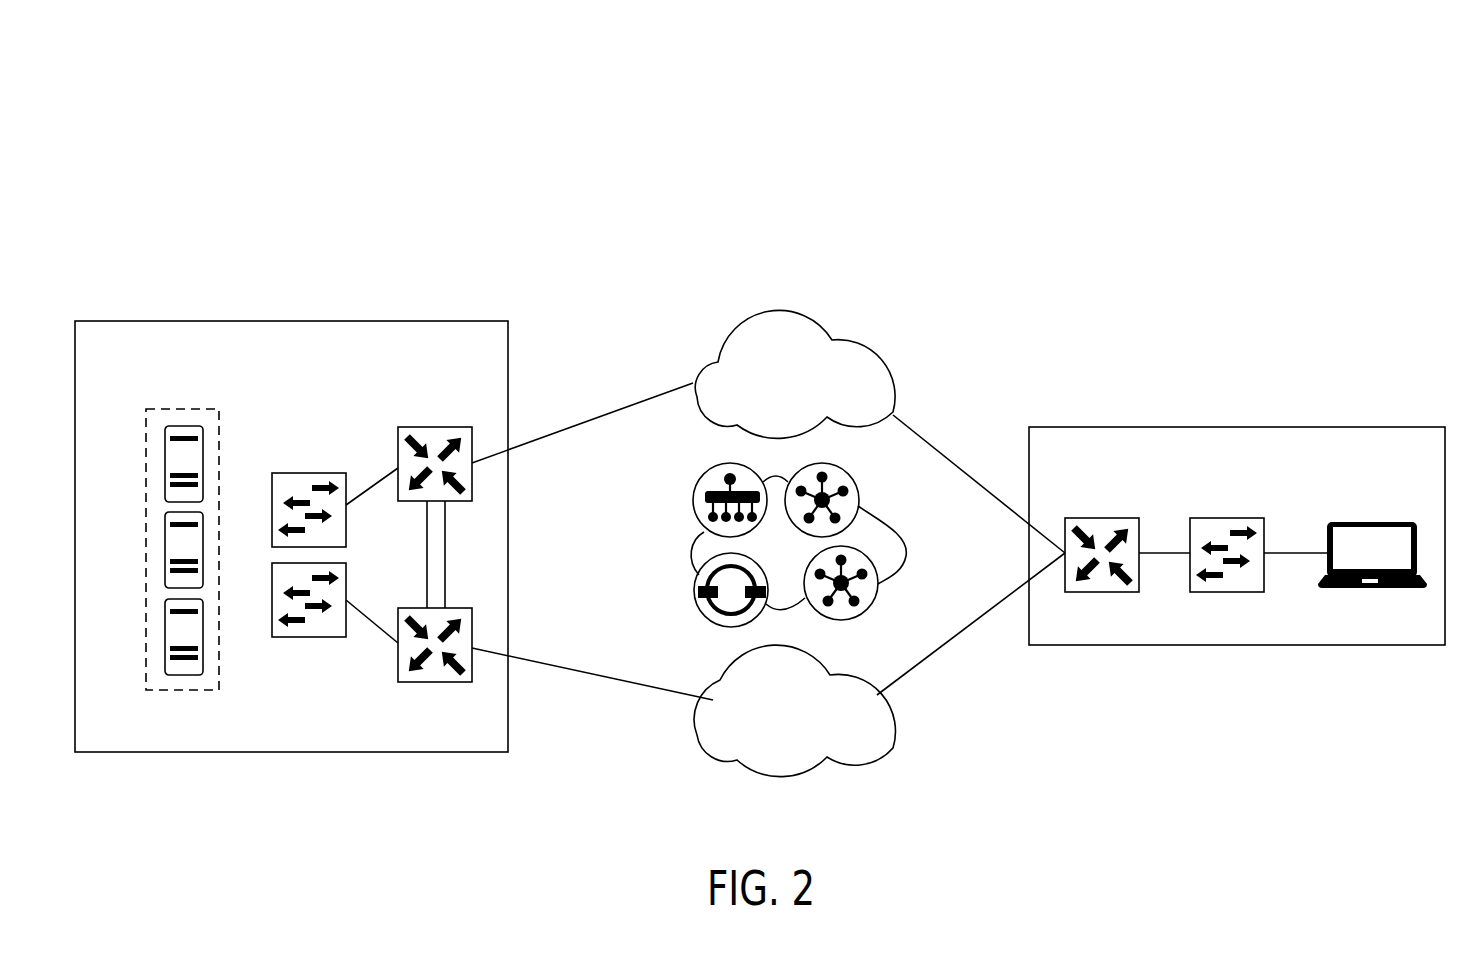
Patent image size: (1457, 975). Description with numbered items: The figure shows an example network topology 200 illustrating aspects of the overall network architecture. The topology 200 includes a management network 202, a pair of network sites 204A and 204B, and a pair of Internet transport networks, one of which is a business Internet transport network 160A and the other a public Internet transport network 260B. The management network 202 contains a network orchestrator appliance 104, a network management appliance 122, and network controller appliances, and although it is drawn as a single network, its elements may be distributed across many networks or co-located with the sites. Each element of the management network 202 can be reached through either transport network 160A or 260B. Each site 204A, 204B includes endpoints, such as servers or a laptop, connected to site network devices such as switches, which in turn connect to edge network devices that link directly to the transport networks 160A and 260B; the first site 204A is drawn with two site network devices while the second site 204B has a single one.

The network topology 200 is at (1400, 187).
The network site 204A is at (367, 369).
The network site 204B is at (1313, 479).
The Internet transport network 160A is at (803, 422).
The public internet 260B is at (800, 756).
The management network 202 is at (907, 546).
The network management appliance 122 is at (705, 473).
The network orchestrator appliance 104 is at (710, 620).